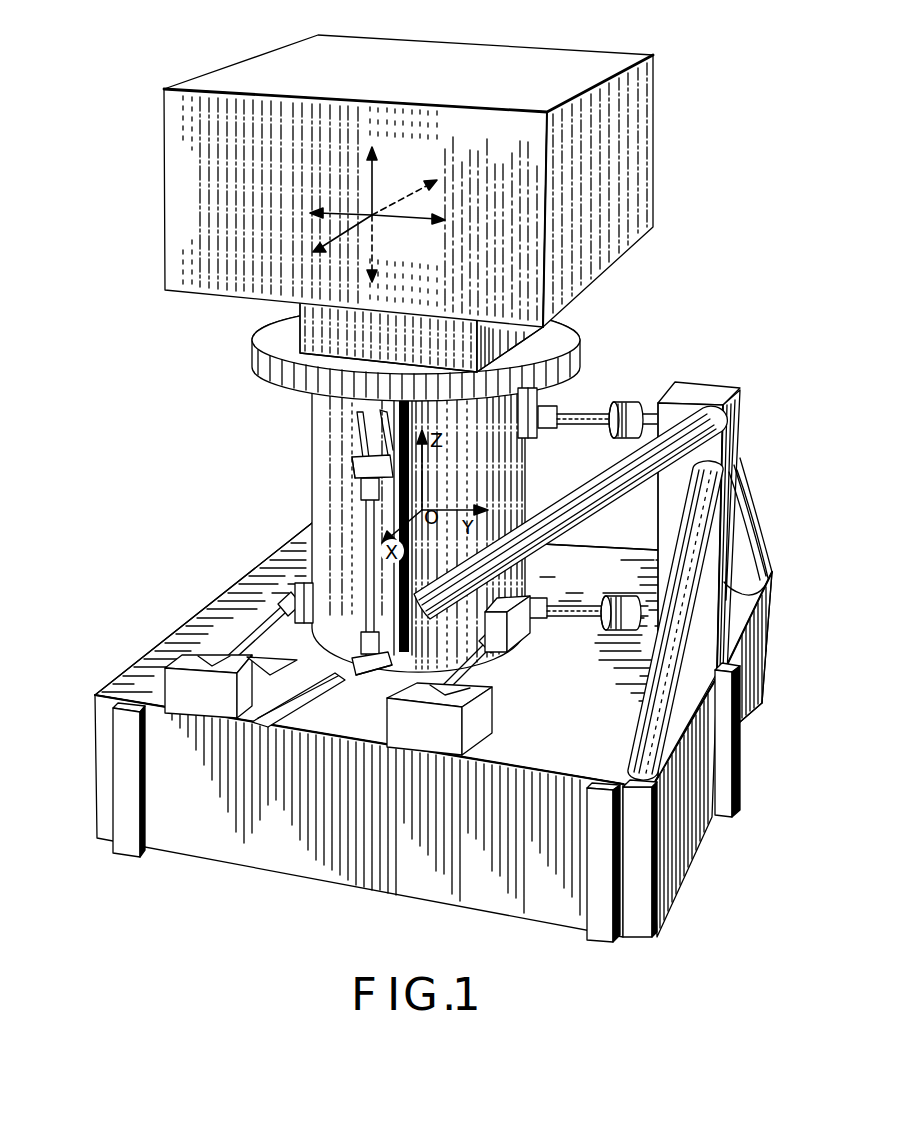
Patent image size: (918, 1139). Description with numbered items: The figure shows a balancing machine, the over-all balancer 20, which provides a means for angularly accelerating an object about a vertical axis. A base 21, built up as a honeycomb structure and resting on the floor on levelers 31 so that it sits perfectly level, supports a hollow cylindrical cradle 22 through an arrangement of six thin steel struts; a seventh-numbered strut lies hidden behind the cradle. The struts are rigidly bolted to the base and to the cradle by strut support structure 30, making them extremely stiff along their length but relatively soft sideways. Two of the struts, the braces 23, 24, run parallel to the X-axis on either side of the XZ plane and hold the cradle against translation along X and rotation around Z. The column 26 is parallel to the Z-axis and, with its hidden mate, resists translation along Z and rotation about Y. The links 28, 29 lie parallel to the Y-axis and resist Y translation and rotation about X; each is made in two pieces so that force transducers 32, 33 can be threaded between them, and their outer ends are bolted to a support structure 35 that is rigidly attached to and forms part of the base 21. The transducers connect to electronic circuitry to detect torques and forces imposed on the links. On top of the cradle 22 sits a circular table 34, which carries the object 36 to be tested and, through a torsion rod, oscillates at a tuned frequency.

The balancer 20 is at (752, 272).
The base 21 is at (95, 746).
The cradle 22 is at (325, 490).
The brace 23 is at (262, 639).
The brace 24 is at (470, 666).
The column 26 is at (365, 545).
The link 28 is at (583, 414).
The link 29 is at (580, 624).
The strut support structure 30 is at (352, 448).
The leveler 31 is at (128, 840).
The force transducer 32 is at (632, 402).
The force transducer 33 is at (611, 604).
The circular table 34 is at (565, 338).
The support structure 35 is at (722, 449).
The object 36 is at (640, 152).